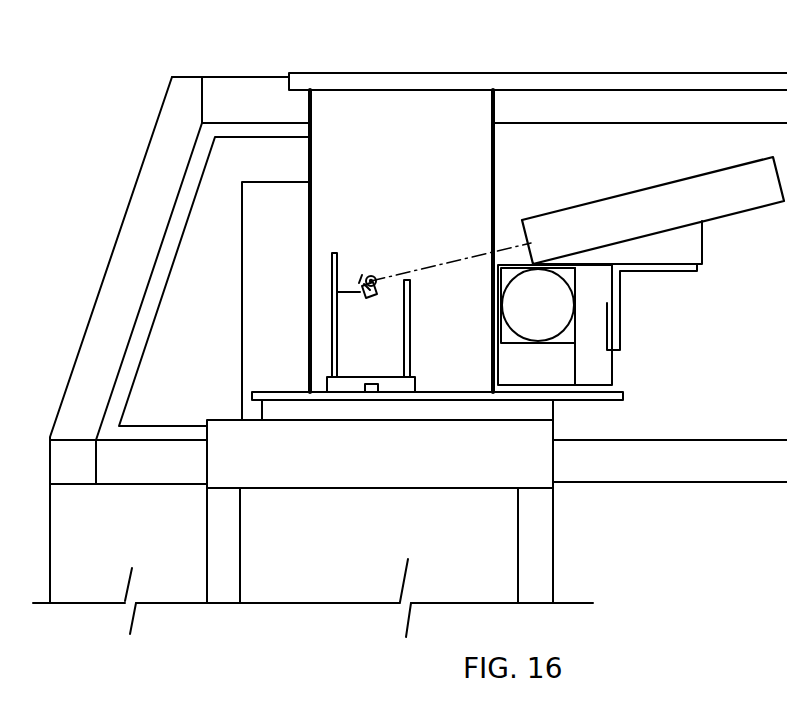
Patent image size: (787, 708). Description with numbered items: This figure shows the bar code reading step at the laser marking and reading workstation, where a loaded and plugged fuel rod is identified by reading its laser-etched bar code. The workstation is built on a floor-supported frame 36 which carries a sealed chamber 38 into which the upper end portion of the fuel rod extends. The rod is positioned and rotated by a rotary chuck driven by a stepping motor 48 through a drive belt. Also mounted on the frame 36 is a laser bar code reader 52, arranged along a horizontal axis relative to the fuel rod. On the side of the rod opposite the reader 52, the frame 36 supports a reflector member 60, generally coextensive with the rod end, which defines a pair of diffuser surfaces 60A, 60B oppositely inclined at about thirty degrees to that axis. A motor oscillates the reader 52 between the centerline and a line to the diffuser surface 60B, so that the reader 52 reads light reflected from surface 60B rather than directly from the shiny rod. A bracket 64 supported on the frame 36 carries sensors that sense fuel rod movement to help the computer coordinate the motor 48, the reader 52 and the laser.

The frame 36 is at (557, 557).
The sealed chamber 38 is at (363, 113).
The stepping motor 48 is at (557, 298).
The laser bar code reader 52 is at (701, 187).
The reflector member 60 is at (331, 301).
The diffuser surface 60A is at (377, 272).
The diffuser surface 60B is at (375, 290).
The bracket 64 is at (332, 352).